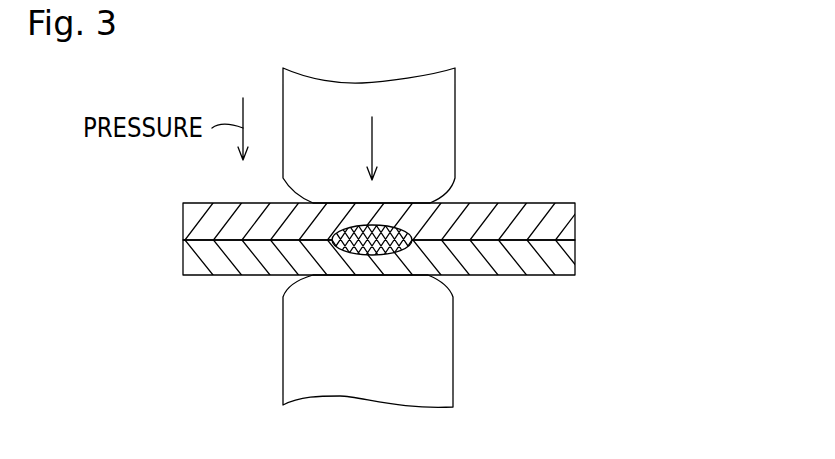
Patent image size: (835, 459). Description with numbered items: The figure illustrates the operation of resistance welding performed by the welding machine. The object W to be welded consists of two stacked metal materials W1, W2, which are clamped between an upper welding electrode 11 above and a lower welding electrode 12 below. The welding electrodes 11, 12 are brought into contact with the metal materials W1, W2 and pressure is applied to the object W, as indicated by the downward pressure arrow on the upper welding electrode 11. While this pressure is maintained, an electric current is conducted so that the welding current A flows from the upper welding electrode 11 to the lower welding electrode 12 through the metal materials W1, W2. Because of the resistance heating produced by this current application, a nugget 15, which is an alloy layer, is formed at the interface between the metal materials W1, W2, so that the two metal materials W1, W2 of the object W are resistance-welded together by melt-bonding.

The upper welding electrode 11 is at (455, 112).
The lower welding electrode 12 is at (455, 362).
The nugget 15 is at (337, 247).
The object to be welded W is at (415, 232).
The metal material W1 is at (503, 213).
The metal material W2 is at (508, 265).
The welding current A is at (372, 133).